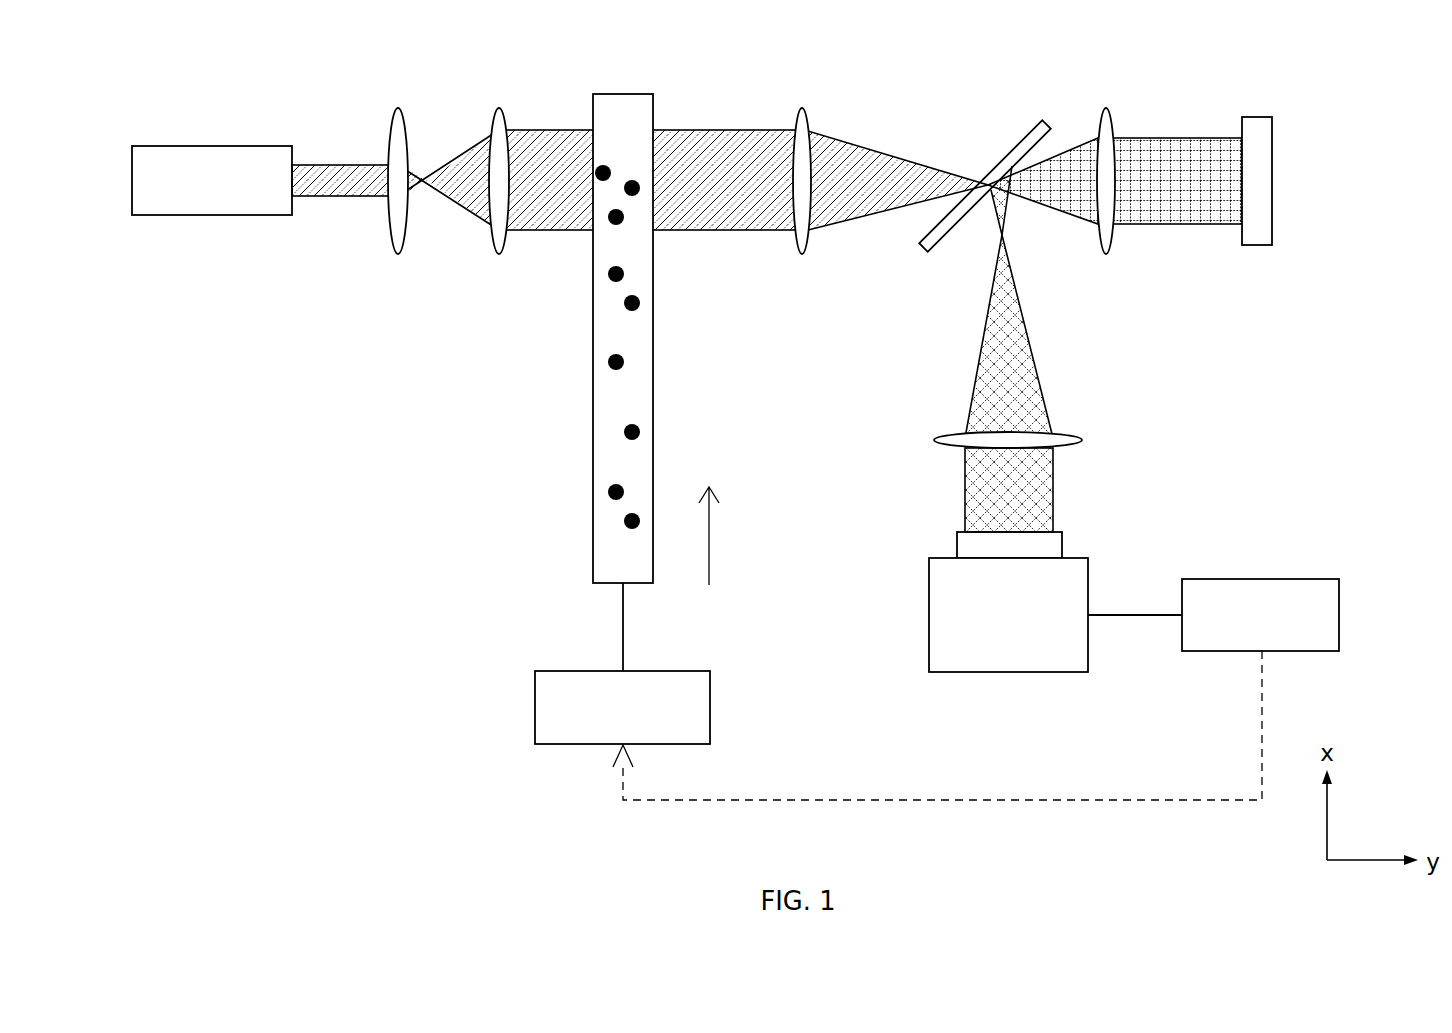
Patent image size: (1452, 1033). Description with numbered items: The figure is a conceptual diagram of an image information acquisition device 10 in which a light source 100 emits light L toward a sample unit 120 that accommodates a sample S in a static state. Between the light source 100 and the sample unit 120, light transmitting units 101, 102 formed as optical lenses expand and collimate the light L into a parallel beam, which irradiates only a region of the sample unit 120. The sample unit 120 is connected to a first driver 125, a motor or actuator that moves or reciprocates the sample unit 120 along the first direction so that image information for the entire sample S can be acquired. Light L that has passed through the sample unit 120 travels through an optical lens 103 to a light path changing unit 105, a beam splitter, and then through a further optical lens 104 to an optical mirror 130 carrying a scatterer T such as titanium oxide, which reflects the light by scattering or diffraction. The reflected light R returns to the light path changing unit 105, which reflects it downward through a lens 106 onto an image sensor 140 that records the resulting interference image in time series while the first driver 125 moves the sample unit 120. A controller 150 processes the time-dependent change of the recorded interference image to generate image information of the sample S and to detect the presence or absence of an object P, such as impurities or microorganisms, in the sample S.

The image information acquisition device 10 is at (1388, 16).
The light source 100 is at (212, 146).
The light transmitting unit 101 is at (398, 108).
The light transmitting unit 102 is at (500, 108).
The optical lens 103 is at (803, 107).
The optical lens 104 is at (1107, 107).
The light path changing unit 105 is at (1023, 128).
The fifth lens 106 is at (1083, 440).
The sample unit 120 is at (623, 94).
The first driver 125 is at (535, 708).
The optical mirror 130 is at (1258, 117).
The image sensor 140 is at (1010, 672).
The controller 150 is at (1339, 617).
The light L is at (340, 165).
The object P is at (606, 172).
The sample S is at (606, 245).
The reflected light R is at (1073, 143).
The scatterer T is at (1262, 162).